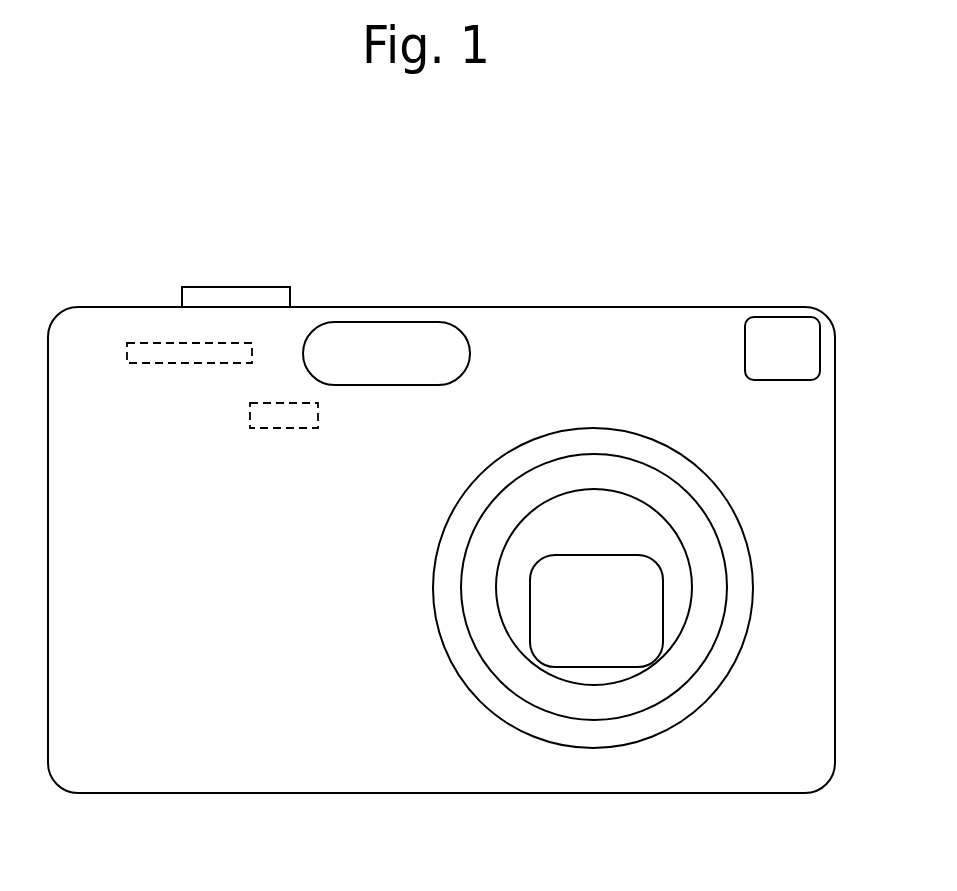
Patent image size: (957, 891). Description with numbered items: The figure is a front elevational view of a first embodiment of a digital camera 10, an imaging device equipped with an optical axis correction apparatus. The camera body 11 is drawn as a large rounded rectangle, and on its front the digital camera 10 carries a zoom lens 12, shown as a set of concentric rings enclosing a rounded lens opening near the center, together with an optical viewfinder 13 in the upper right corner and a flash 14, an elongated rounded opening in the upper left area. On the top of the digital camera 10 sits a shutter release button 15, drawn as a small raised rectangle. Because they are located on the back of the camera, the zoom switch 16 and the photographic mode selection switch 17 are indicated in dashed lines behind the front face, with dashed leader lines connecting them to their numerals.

The digital camera 10 is at (87, 217).
The camera body 11 is at (603, 340).
The zoom lens 12 is at (583, 515).
The optical viewfinder 13 is at (790, 350).
The flash 14 is at (388, 355).
The shutter release button 15 is at (227, 297).
The zoom switch 16 is at (145, 355).
The photographic mode selection switch 17 is at (272, 410).